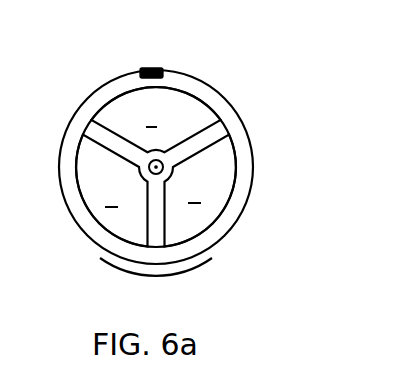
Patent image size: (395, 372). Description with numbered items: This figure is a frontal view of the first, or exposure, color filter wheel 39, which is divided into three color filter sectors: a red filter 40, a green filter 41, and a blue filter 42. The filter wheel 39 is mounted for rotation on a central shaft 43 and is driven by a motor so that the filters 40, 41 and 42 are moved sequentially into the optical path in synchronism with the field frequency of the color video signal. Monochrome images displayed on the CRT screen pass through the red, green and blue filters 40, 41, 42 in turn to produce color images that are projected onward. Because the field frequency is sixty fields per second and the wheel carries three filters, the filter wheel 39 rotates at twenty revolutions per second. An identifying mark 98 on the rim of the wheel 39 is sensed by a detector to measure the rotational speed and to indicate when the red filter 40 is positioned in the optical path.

The exposure color filter wheel 39 is at (160, 265).
The red filter 40 is at (225, 163).
The green filter 41 is at (112, 218).
The blue filter 42 is at (198, 105).
The shaft 43 is at (164, 167).
The identifying mark 98 is at (156, 68).